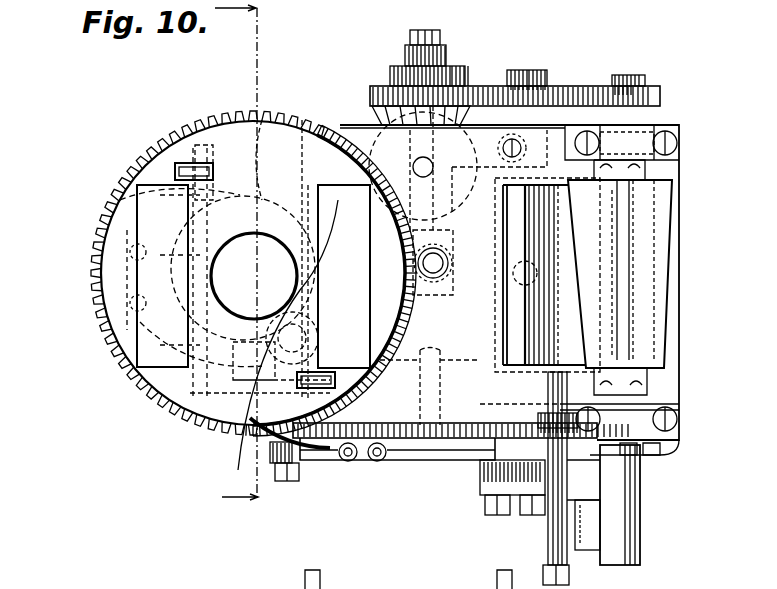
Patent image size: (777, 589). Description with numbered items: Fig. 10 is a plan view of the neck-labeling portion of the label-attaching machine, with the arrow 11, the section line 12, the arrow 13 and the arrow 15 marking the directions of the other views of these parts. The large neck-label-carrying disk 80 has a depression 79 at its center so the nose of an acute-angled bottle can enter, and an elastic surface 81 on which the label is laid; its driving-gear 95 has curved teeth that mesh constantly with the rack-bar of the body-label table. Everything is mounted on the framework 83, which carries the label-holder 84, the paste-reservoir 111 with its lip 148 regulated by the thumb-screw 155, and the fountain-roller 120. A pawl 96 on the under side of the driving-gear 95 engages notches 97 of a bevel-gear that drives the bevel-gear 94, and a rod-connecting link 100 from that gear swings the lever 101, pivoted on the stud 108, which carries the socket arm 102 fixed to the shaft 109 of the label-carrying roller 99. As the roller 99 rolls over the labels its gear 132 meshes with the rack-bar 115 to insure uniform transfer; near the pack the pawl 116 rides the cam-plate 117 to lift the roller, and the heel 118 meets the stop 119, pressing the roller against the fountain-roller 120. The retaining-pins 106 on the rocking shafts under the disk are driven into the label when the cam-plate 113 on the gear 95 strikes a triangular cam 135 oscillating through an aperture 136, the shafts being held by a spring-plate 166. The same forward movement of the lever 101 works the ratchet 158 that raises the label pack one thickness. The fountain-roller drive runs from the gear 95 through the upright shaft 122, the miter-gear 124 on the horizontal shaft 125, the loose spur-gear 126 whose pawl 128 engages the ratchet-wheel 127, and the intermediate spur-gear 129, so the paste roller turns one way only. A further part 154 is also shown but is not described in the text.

The arrow 11 is at (397, 542).
The section line 12 is at (243, 252).
The arrow 13 is at (82, 275).
The arrow 15 is at (425, 25).
The depression 79 is at (254, 276).
The neck-label-carrying disk 80 is at (127, 342).
The elastic surface 81 is at (137, 195).
The framework 83 is at (428, 456).
The label-holder 84 is at (510, 215).
The bevel-gear 94 is at (218, 404).
The driving-gear 95 is at (166, 410).
The pawl 96 is at (272, 162).
The notches 97 is at (243, 420).
The label-carrying roller 99 is at (520, 250).
The rod-connecting link 100 is at (420, 455).
The lever 101 is at (530, 500).
The socket arm 102 is at (598, 540).
The retaining-pins 106 is at (185, 192).
The stud 108 is at (500, 520).
The shaft 109 is at (552, 520).
The paste-reservoir 111 is at (668, 300).
The cam-plate 113 is at (328, 445).
The rack-bar 115 is at (418, 440).
The pawl 116 is at (640, 520).
The cam-plate 117 is at (620, 480).
The heel 118 is at (630, 455).
The stop 119 is at (655, 452).
The fountain-roller 120 is at (632, 226).
The upright shaft 122 is at (470, 90).
The miter-gear 124 is at (374, 115).
The horizontal shaft 125 is at (435, 40).
The spur-gear 126 is at (392, 80).
The ratchet-wheel 127 is at (408, 62).
The pawl 128 is at (425, 165).
The intermediate spur-gear 129 is at (555, 92).
The gear 132 is at (640, 90).
The triangular cam 135 is at (185, 165).
The aperture 136 is at (205, 160).
The lip 148 is at (622, 280).
The link 154 is at (258, 150).
The thumb-screw 155 is at (358, 425).
The ratchet 158 is at (340, 447).
The spring-plate 166 is at (135, 288).